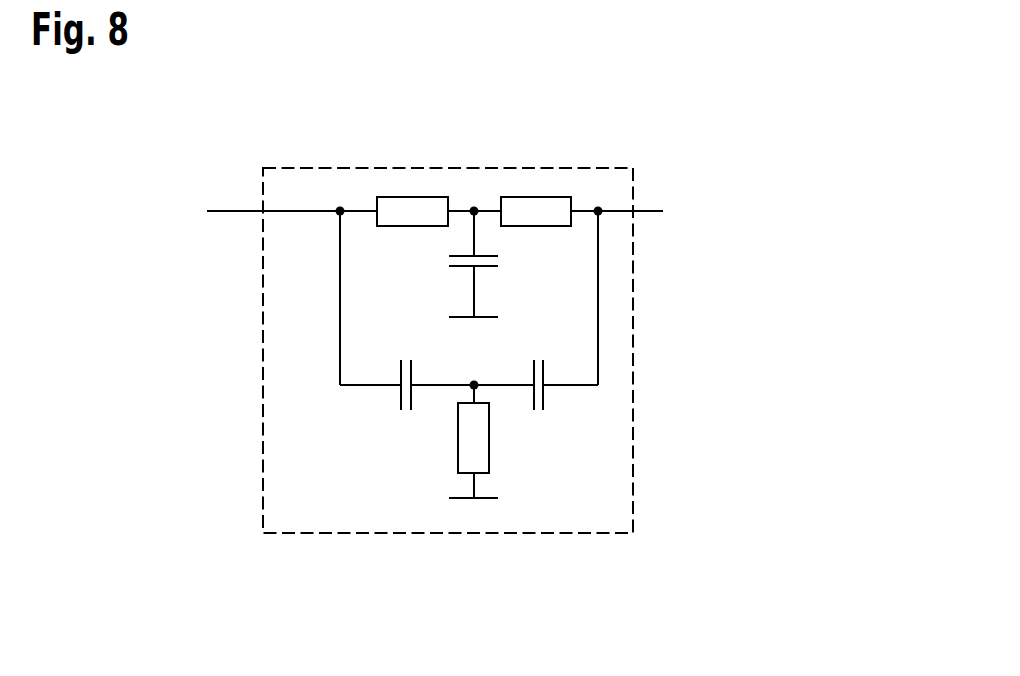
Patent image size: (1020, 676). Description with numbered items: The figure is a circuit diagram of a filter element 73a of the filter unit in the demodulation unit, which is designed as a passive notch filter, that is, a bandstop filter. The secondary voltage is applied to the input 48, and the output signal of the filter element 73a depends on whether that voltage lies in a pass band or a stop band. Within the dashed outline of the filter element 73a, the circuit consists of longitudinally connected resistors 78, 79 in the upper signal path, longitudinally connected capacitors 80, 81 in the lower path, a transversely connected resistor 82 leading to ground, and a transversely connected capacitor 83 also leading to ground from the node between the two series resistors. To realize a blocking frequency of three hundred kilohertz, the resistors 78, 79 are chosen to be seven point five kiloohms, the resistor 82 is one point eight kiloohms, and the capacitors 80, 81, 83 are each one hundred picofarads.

The input 48 is at (168, 279).
The filter element 73a is at (303, 168).
The longitudinally connected resistor 78 is at (412, 197).
The longitudinally connected resistor 79 is at (535, 197).
The longitudinally connected capacitor 80 is at (401, 398).
The longitudinally connected capacitor 81 is at (543, 370).
The transversely connected resistor 82 is at (489, 443).
The transversely connected capacitor 83 is at (487, 267).